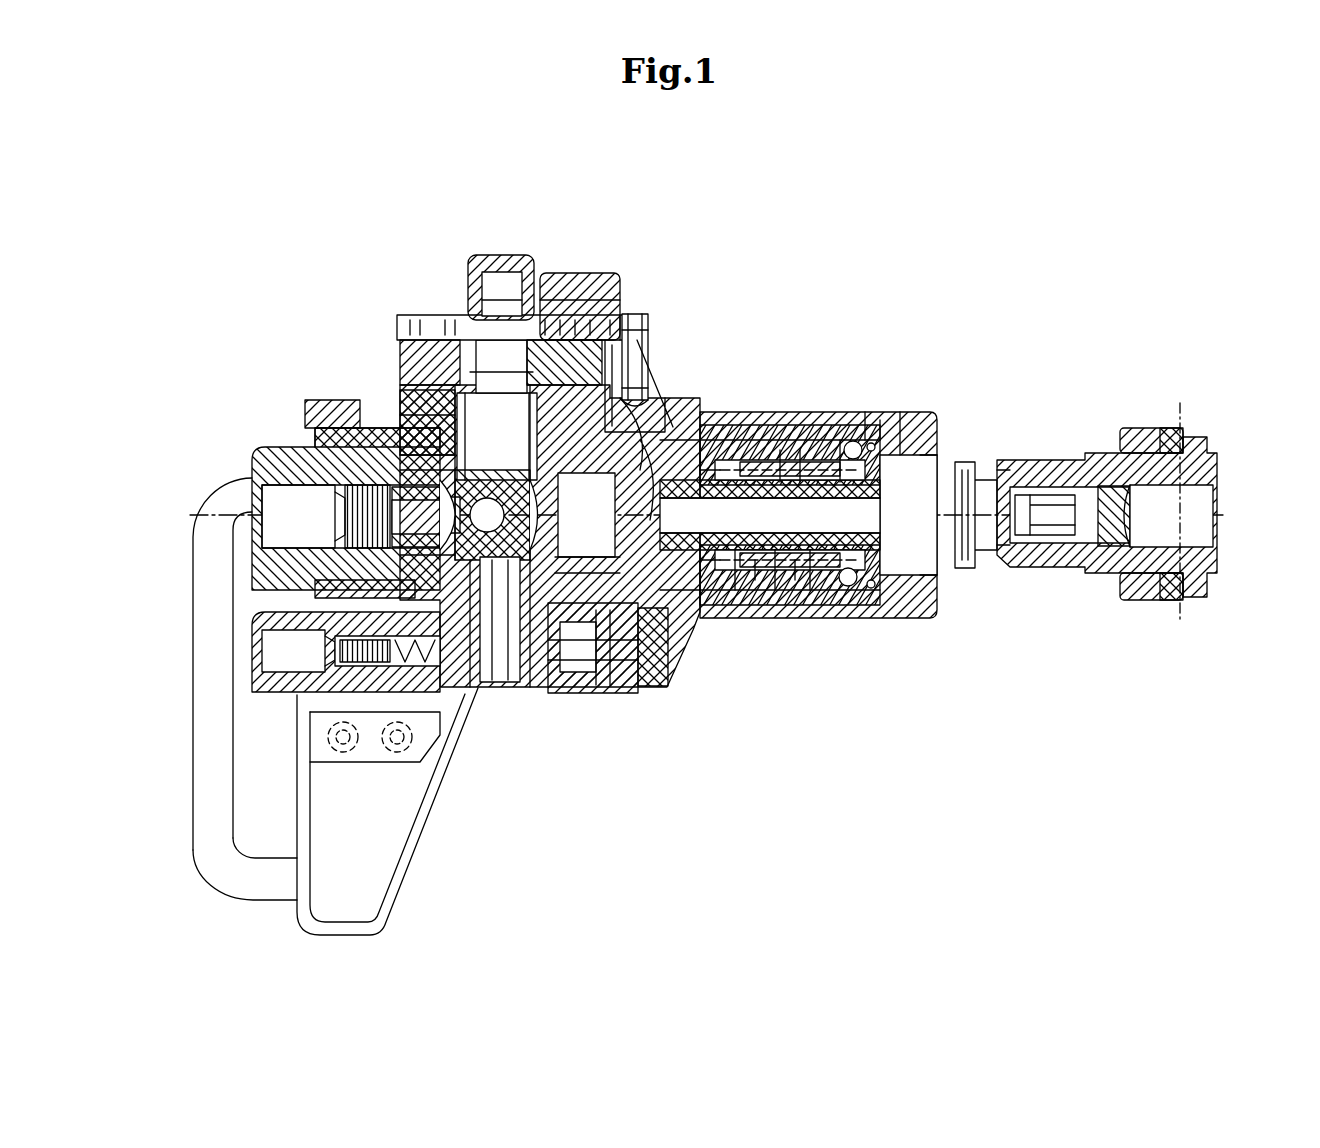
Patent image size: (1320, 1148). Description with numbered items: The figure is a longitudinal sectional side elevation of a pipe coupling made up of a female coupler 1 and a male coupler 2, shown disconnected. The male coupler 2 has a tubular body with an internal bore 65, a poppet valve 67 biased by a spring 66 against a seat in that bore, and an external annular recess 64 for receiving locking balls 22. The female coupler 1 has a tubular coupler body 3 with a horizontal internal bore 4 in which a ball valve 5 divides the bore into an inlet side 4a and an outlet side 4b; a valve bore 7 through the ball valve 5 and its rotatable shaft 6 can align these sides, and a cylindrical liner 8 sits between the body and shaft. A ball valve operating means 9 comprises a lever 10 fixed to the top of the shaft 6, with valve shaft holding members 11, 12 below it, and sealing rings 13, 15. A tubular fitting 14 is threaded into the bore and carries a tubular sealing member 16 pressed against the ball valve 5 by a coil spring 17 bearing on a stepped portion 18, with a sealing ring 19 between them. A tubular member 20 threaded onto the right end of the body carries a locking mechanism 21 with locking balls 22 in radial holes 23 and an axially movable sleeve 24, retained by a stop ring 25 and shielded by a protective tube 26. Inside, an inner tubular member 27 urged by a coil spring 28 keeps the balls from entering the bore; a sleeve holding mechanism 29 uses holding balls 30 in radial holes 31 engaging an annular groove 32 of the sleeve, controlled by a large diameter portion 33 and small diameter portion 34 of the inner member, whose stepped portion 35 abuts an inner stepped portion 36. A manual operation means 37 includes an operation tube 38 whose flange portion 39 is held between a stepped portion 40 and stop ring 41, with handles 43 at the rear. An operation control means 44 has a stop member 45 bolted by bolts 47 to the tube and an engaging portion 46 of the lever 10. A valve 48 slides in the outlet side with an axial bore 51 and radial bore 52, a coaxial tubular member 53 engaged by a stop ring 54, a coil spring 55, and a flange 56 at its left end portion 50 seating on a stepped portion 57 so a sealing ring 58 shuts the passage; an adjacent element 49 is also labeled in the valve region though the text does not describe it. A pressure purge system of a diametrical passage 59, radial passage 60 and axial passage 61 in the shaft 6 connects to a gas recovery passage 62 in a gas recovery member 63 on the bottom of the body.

The female coupler 1 is at (303, 396).
The male coupler 2 is at (1093, 430).
The tubular coupler body 3 is at (402, 400).
The internal bore 4 is at (290, 497).
The inlet side 4a is at (280, 527).
The outlet side 4b is at (575, 660).
The ball valve 5 is at (540, 662).
The rotatable shaft 6 is at (427, 350).
The valve bore 7 is at (510, 660).
The cylindrical liner 8 is at (430, 420).
The ball valve operating means 9 is at (532, 260).
The lever 10 is at (480, 258).
The valve shaft holding member 11 is at (408, 347).
The valve shaft holding member 12 is at (460, 385).
The sealing ring 13 is at (478, 418).
The tubular fitting 14 is at (268, 445).
The sealing ring 15 is at (410, 445).
The tubular sealing member 16 is at (403, 480).
The coil spring 17 is at (290, 460).
The stepped portion 18 is at (285, 552).
The sealing ring 19 is at (325, 428).
The tubular member 20 is at (692, 622).
The locking mechanism 21 is at (876, 440).
The locking balls 22 is at (905, 470).
The radial holes 23 is at (945, 462).
The sleeve 24 is at (768, 462).
The stop ring 25 is at (925, 478).
The protective tube 26 is at (938, 492).
The inner tubular member 27 is at (805, 590).
The coil spring 28 is at (730, 590).
The sleeve holding mechanism 29 is at (788, 462).
The holding balls 30 is at (758, 590).
The radial holes 31 is at (772, 590).
The annular groove 32 is at (808, 462).
The large diameter portion 33 is at (790, 590).
The small diameter portion 34 is at (840, 588).
The stepped portion 35 is at (882, 418).
The inner stepped portion 36 is at (870, 450).
The manual operation means 37 is at (612, 505).
The operation tube 38 is at (716, 465).
The flange portion 39 is at (842, 455).
The stepped portion 40 is at (846, 442).
The stop ring 41 is at (864, 442).
The handles 43 is at (215, 707).
The operation control means 44 is at (572, 270).
The stop member 45 is at (592, 280).
The engaging portion 46 is at (505, 258).
The bolts 47 is at (632, 330).
The valve 48 is at (704, 590).
The outlet bore 49 is at (602, 665).
The left end portion 50 is at (660, 485).
The axial bore 51 is at (848, 520).
The radial bore 52 is at (702, 465).
The coaxial tubular member 53 is at (830, 590).
The stop ring 54 is at (878, 532).
The coil spring 55 is at (746, 462).
The flange 56 is at (640, 475).
The stepped portion 57 is at (612, 695).
The sealing ring 58 is at (648, 660).
The diametrical passage 59 is at (505, 692).
The radial passage 60 is at (470, 692).
The axial passage 61 is at (490, 682).
The gas recovery passage 62 is at (272, 645).
The gas recovery member 63 is at (360, 692).
The annular recess 64 is at (1008, 463).
The internal bore 65 is at (1215, 490).
The spring 66 is at (1068, 545).
The poppet valve 67 is at (995, 562).